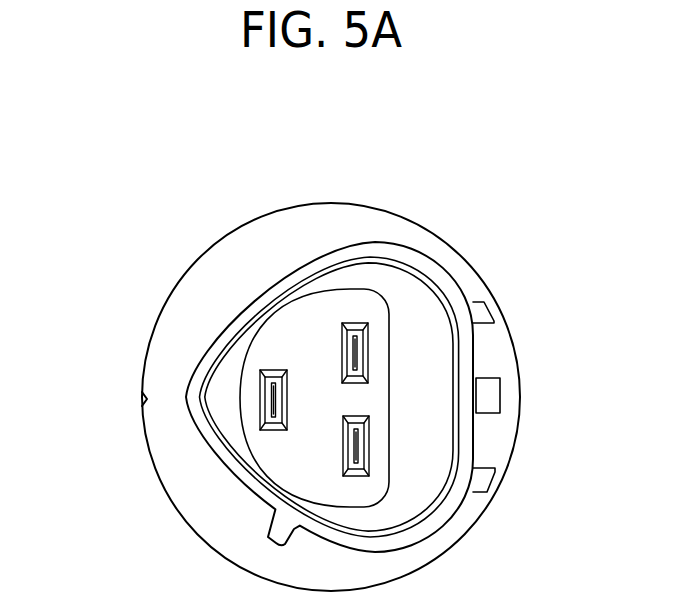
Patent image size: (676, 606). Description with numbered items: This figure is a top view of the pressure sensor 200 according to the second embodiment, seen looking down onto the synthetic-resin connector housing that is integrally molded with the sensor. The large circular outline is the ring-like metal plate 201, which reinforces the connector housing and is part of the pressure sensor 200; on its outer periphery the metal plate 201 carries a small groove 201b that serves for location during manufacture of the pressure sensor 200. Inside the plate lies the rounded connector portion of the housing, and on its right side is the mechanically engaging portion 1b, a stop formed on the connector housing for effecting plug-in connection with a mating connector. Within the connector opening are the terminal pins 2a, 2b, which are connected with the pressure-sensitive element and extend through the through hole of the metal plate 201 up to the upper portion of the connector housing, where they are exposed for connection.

The pressure sensor 200 is at (595, 177).
The metal plate 201 is at (273, 252).
The groove 201b is at (143, 400).
The mechanically engaging portion 1b is at (500, 392).
The terminal pin 2a is at (273, 370).
The terminal pin 2b is at (357, 323).